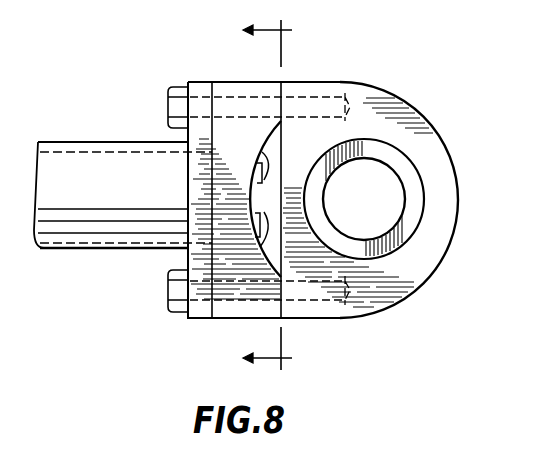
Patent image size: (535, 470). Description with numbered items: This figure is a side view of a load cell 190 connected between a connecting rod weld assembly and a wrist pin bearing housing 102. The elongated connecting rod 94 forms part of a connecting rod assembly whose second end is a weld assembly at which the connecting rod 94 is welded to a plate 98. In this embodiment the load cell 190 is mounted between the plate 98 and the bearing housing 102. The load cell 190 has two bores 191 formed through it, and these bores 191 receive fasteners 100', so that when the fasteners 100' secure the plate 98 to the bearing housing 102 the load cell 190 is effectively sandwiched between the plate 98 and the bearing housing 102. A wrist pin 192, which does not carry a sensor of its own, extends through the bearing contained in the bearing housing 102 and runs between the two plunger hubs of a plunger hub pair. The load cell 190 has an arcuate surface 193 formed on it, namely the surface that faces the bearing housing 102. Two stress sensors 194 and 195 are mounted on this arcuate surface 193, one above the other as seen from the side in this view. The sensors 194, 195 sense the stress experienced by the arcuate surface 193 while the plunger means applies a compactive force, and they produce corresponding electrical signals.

The connecting rod 94 is at (73, 168).
The plate 98 is at (206, 134).
The fasteners 100' is at (228, 186).
The bearing housing 102 is at (427, 262).
The load cell 190 is at (223, 124).
The bores 191 is at (281, 67).
The wrist pin 192 is at (382, 178).
The arcuate surface 193 is at (253, 197).
The stress sensor 194 is at (259, 153).
The stress sensor 195 is at (262, 246).